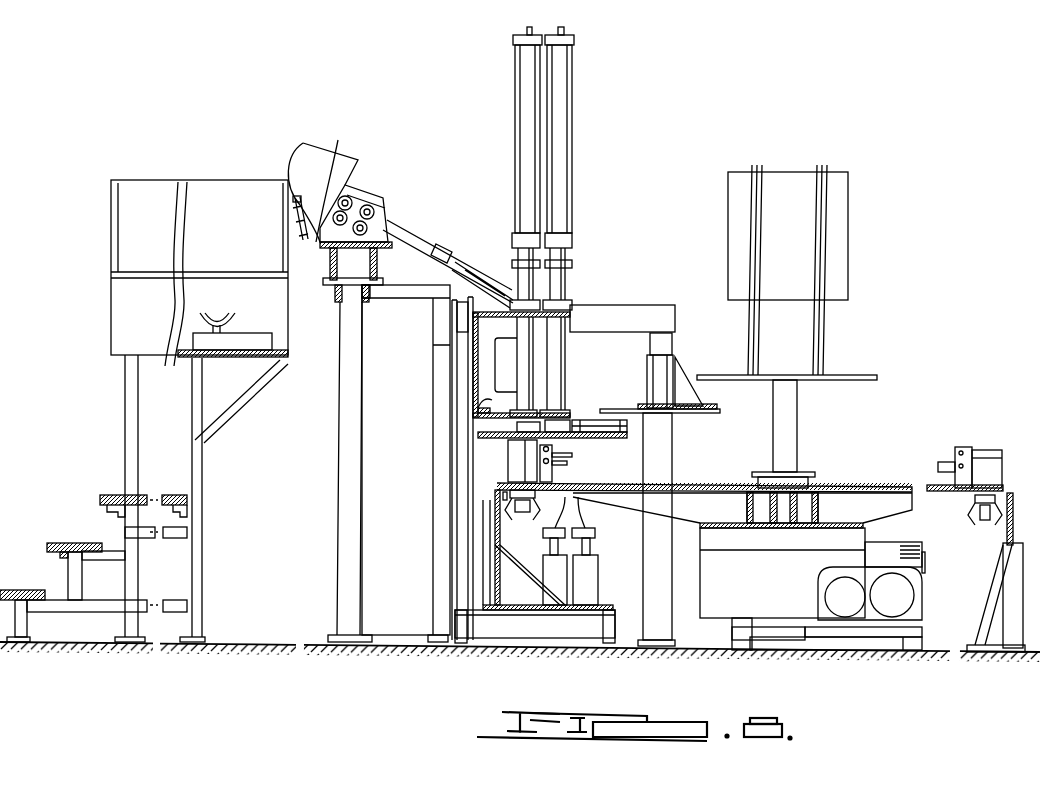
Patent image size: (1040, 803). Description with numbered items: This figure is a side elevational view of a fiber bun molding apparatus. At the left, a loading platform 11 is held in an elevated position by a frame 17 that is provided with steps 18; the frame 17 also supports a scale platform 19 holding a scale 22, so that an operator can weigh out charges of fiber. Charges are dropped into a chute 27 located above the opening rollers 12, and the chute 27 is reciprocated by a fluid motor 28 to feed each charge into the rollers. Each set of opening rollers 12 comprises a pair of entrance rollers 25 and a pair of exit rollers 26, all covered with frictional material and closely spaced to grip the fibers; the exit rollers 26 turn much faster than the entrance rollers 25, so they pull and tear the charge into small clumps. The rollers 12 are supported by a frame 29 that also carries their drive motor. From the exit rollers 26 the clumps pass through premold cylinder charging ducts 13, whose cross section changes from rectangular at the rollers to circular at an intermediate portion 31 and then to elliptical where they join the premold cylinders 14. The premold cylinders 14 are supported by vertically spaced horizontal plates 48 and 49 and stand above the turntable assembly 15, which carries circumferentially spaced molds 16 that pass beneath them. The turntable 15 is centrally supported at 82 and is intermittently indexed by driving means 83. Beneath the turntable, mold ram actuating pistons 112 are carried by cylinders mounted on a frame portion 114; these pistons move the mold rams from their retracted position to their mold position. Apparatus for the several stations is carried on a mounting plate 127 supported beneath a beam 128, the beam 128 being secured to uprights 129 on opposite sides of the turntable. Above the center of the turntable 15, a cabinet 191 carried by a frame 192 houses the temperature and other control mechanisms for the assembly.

The loading platform 11 is at (110, 495).
The opening rollers 12 is at (367, 182).
The premold cylinder charging ducts 13 is at (466, 246).
The premold cylinders 14 is at (540, 172).
The turntable assembly 15 is at (864, 486).
The molds 16 is at (503, 464).
The frame 17 is at (200, 568).
The steps 18 is at (55, 540).
The scale platform 19 is at (250, 350).
The scale 22 is at (242, 330).
The entrance rollers 25 is at (333, 180).
The exit rollers 26 is at (362, 227).
The chute 27 is at (305, 147).
The fluid motor 28 is at (300, 213).
The frame 29 is at (440, 433).
The intermediate portion of duct 31 is at (420, 243).
The horizontal plate 48 is at (508, 318).
The horizontal plate 49 is at (480, 405).
The central support 82 is at (787, 518).
The driving means 83 is at (907, 598).
The mold ram actuating piston 112 is at (544, 509).
The frame portion 114 is at (583, 623).
The mounting plate 127 is at (707, 413).
The beam 128 is at (658, 370).
The uprights 129 is at (668, 455).
The cabinet 191 is at (835, 245).
The frame 192 is at (823, 338).